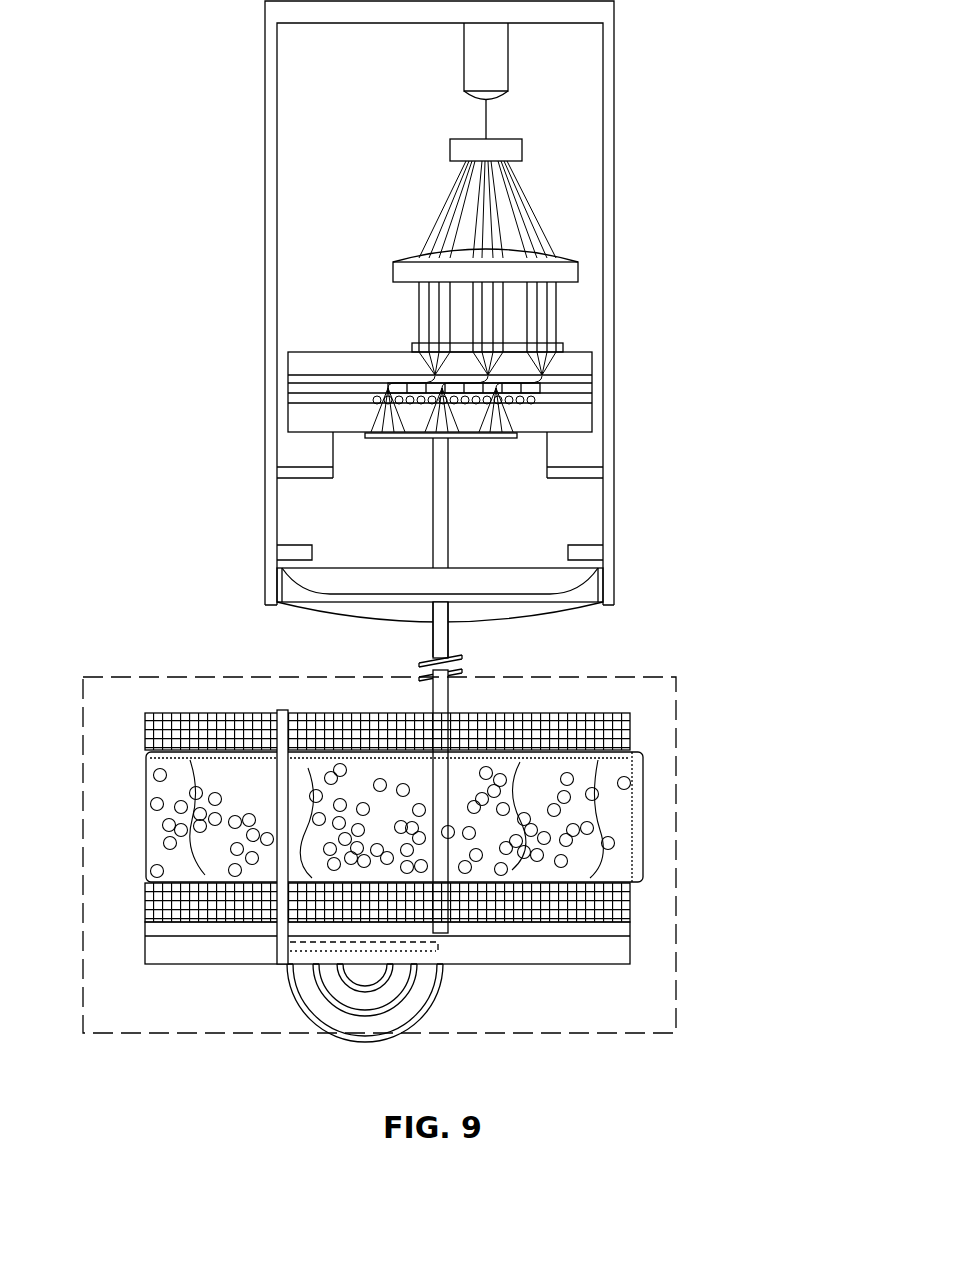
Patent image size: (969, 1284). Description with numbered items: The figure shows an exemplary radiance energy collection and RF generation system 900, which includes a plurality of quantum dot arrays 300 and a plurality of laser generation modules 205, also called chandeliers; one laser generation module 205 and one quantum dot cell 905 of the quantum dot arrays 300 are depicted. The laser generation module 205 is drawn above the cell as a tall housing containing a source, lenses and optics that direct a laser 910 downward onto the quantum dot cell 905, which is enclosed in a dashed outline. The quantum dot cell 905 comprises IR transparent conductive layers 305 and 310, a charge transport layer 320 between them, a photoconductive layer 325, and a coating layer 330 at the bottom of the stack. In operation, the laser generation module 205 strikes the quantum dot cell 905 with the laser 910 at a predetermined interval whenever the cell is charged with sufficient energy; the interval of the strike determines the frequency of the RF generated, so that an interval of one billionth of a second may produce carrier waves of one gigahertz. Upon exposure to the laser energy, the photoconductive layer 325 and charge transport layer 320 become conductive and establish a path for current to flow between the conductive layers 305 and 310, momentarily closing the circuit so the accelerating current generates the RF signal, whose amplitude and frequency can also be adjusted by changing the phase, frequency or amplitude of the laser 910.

The laser generation module 205 is at (268, 135).
The quantum dot array 300 is at (605, 705).
The IR transparent conductive layer 305 is at (632, 712).
The IR transparent conductive layer 310 is at (632, 900).
The charge transport layer 320 is at (650, 812).
The photoconductive layer 325 is at (145, 928).
The coating layer 330 is at (632, 946).
The radiance energy collection and RF generation system 900 is at (125, 1073).
The quantum dot cell 905 is at (103, 677).
The laser 910 is at (452, 683).